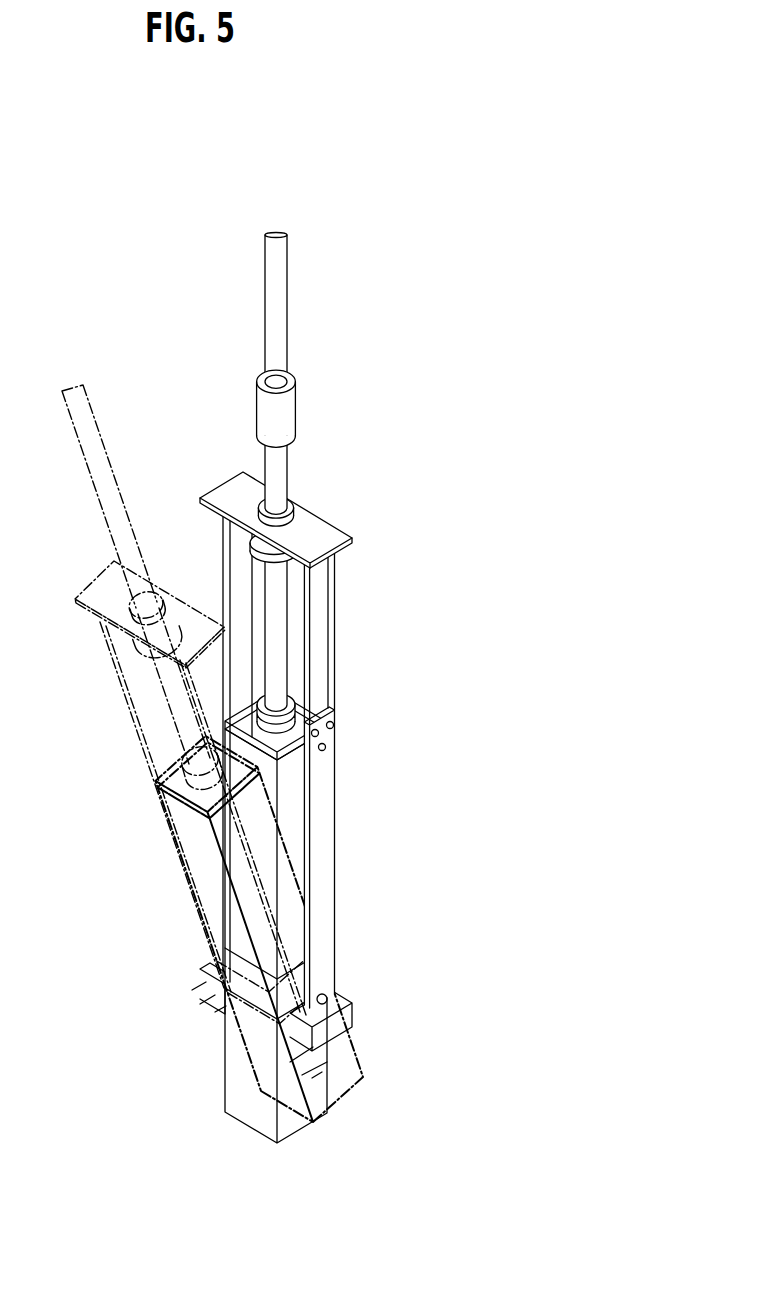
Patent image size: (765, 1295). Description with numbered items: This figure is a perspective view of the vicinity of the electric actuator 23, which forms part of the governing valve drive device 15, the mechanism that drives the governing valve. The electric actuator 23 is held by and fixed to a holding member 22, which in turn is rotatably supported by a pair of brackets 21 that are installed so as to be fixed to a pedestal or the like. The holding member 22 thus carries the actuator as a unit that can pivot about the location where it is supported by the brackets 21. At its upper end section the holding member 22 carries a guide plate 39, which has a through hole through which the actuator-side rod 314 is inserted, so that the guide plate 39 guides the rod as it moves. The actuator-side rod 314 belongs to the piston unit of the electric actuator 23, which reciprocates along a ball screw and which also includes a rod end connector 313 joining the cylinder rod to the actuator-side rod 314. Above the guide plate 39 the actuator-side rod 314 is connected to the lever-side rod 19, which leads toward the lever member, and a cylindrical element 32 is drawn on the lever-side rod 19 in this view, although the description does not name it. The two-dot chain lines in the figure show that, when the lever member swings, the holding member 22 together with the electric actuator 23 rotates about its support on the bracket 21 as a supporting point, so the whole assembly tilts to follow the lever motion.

The governing valve drive device 15 is at (364, 373).
The lever-side rod 19 is at (265, 291).
The cylinder 32 is at (297, 405).
The guide plate 39 is at (320, 526).
The holding member 22 is at (223, 566).
The actuator-side rod 314 is at (287, 600).
The rod end connector 313 is at (297, 700).
The electric actuator 23 is at (292, 817).
The bracket 21 is at (205, 968).